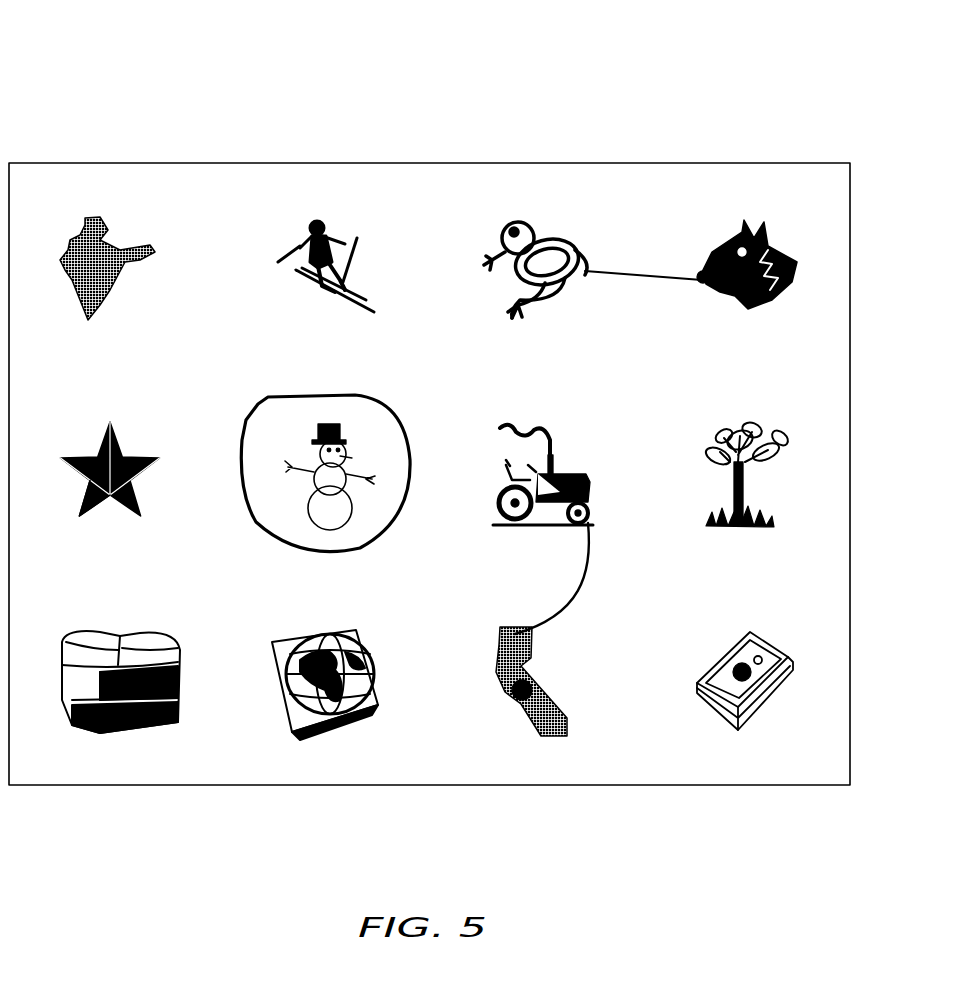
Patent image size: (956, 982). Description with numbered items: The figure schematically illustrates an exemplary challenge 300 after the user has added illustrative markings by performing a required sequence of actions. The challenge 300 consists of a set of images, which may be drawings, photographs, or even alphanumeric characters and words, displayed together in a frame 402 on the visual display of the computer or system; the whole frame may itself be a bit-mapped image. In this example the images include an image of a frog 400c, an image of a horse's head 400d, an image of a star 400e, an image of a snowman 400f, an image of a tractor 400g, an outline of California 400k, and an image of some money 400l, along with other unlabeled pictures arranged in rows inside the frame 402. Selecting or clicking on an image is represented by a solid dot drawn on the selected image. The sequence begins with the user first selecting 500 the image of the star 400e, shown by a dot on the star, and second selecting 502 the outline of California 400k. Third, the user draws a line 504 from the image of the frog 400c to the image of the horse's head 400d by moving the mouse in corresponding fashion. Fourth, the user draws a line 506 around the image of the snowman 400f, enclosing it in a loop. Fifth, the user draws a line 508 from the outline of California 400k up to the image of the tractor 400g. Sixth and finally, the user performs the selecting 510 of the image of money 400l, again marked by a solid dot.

The challenge 300 is at (244, 110).
The frame 402 is at (632, 163).
The image of a frog 400c is at (560, 232).
The image of a horse's head 400d is at (760, 250).
The line 504 is at (650, 282).
The image of a star 400e is at (130, 457).
The selecting 500 is at (118, 510).
The image of a snowman 400f is at (318, 456).
The line 506 is at (395, 416).
The image of a tractor 400g is at (566, 470).
The line 508 is at (604, 583).
The outline of California 400k is at (540, 672).
The selecting 502 is at (522, 702).
The image of some money 400l is at (757, 640).
The selecting 510 is at (738, 662).